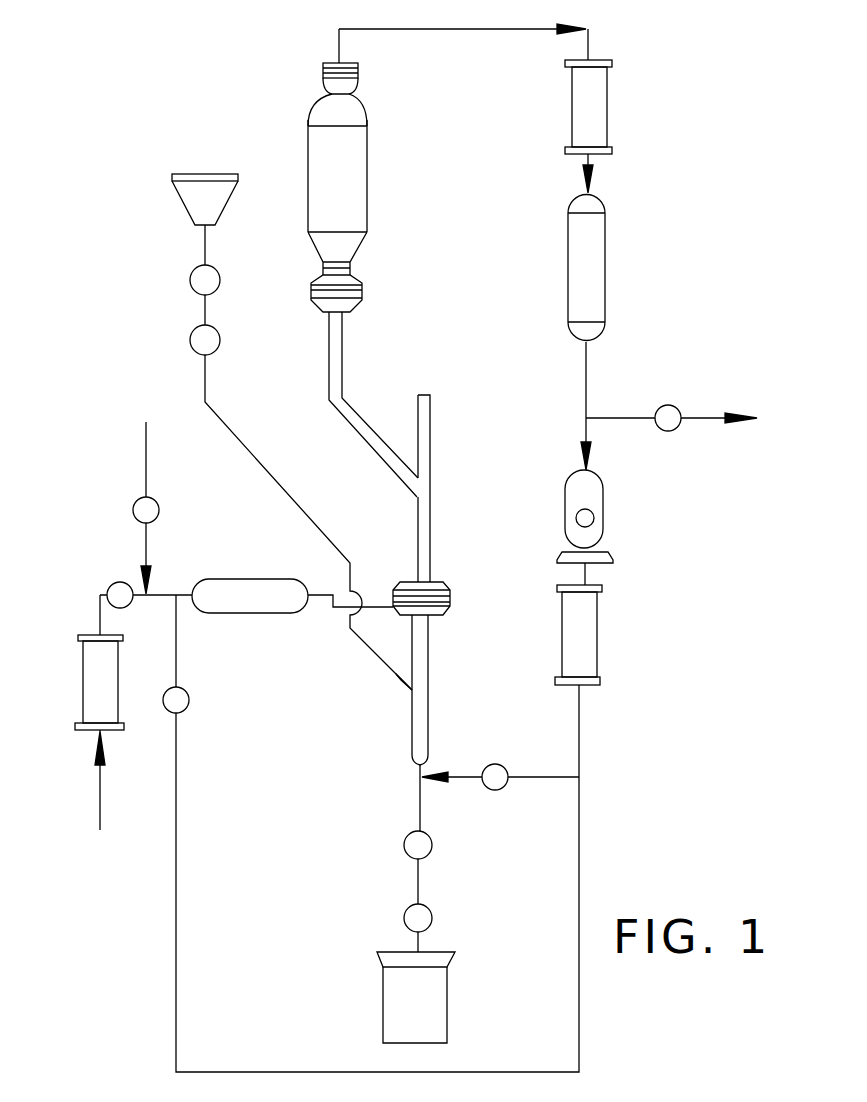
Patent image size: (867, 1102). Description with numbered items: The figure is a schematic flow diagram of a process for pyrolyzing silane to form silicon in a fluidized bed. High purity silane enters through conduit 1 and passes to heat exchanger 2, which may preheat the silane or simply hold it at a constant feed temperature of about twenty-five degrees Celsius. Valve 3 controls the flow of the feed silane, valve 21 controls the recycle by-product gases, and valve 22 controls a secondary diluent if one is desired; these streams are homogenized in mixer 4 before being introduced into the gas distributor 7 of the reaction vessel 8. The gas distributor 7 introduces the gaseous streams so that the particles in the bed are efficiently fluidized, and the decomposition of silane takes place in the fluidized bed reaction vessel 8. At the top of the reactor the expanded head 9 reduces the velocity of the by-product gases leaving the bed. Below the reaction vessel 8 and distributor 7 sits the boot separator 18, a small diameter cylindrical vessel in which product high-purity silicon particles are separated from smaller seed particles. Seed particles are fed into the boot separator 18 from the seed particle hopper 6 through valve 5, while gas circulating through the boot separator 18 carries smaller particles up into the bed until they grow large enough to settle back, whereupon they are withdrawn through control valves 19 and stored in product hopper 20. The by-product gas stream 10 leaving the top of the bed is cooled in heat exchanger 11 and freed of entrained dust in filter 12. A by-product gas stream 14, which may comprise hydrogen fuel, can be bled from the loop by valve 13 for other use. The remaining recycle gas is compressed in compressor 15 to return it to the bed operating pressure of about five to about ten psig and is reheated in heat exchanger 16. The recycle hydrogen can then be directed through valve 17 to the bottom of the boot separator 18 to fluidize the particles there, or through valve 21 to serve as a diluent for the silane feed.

The conduit 1 is at (100, 806).
The heat exchanger 2 is at (84, 688).
The valve 3 is at (118, 582).
The mixer 4 is at (250, 578).
The valve 5 is at (190, 278).
The seed particle hopper 6 is at (178, 196).
The gas distributor 7 is at (400, 588).
The reaction vessel 8 is at (431, 520).
The expanded head 9 is at (367, 172).
The by-product gas stream 10 is at (437, 29).
The heat exchanger 11 is at (607, 116).
The filter 12 is at (596, 281).
The valve 13 is at (666, 432).
The by-product gas stream 14 is at (743, 422).
The compressor 15 is at (603, 516).
The heat exchanger 16 is at (597, 650).
The valve 17 is at (495, 764).
The boot separator 18 is at (428, 714).
The control valves 19 is at (404, 841).
The product hopper 20 is at (445, 1007).
The valve 21 is at (197, 678).
The valve 22 is at (161, 504).